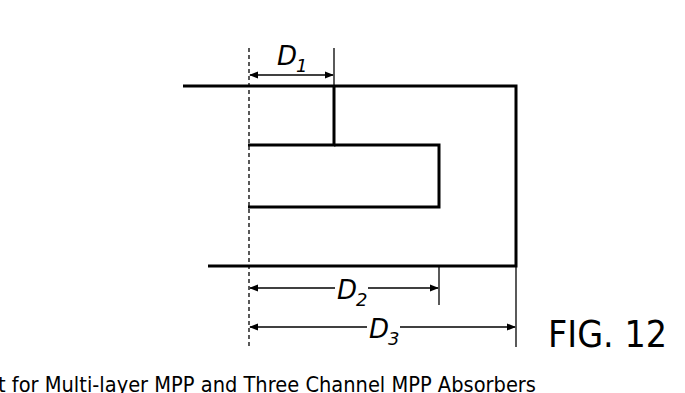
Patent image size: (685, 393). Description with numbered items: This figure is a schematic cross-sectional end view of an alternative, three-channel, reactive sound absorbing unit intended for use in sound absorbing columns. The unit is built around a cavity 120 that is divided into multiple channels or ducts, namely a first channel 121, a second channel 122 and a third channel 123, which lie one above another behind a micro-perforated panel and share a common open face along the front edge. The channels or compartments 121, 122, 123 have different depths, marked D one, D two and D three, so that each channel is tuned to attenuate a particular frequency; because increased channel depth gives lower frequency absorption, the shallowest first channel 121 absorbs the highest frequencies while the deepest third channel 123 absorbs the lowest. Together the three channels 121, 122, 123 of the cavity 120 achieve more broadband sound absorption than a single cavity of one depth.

The cavity 120 is at (460, 78).
The first channel 121 is at (272, 107).
The second channel 122 is at (272, 193).
The third channel 123 is at (272, 238).